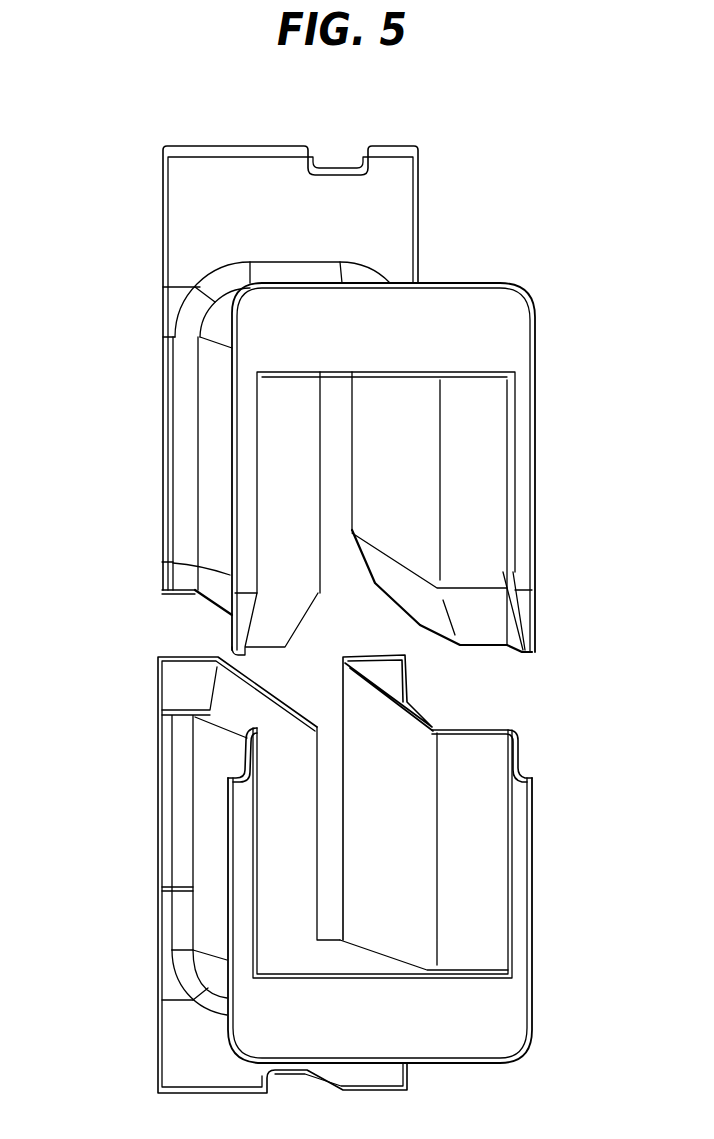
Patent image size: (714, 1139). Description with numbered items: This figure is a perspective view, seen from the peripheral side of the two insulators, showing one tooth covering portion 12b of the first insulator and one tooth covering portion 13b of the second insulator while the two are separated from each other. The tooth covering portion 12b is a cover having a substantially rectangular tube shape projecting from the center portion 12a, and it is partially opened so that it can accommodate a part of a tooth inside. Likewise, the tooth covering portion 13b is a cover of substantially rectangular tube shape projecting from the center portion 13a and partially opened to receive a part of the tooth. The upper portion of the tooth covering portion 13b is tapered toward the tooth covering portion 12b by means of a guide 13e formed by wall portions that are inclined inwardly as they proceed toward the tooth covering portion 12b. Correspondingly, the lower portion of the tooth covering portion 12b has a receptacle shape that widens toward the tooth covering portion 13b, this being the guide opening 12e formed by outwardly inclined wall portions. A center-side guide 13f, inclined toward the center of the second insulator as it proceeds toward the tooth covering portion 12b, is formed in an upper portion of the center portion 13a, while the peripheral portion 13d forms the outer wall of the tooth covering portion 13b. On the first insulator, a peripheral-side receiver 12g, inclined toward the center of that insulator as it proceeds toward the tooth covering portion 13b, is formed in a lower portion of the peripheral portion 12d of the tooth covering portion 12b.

The center portion 12a is at (398, 145).
The tooth covering portion 12b is at (217, 427).
The peripheral portion 12d is at (535, 638).
The guide opening 12e is at (482, 622).
The peripheral-side receiver 12g is at (423, 605).
The center portion 13a is at (157, 902).
The tooth covering portion 13b is at (213, 893).
The peripheral portion 13d is at (532, 835).
The guide 13e is at (267, 627).
The center-side guide 13f is at (187, 687).